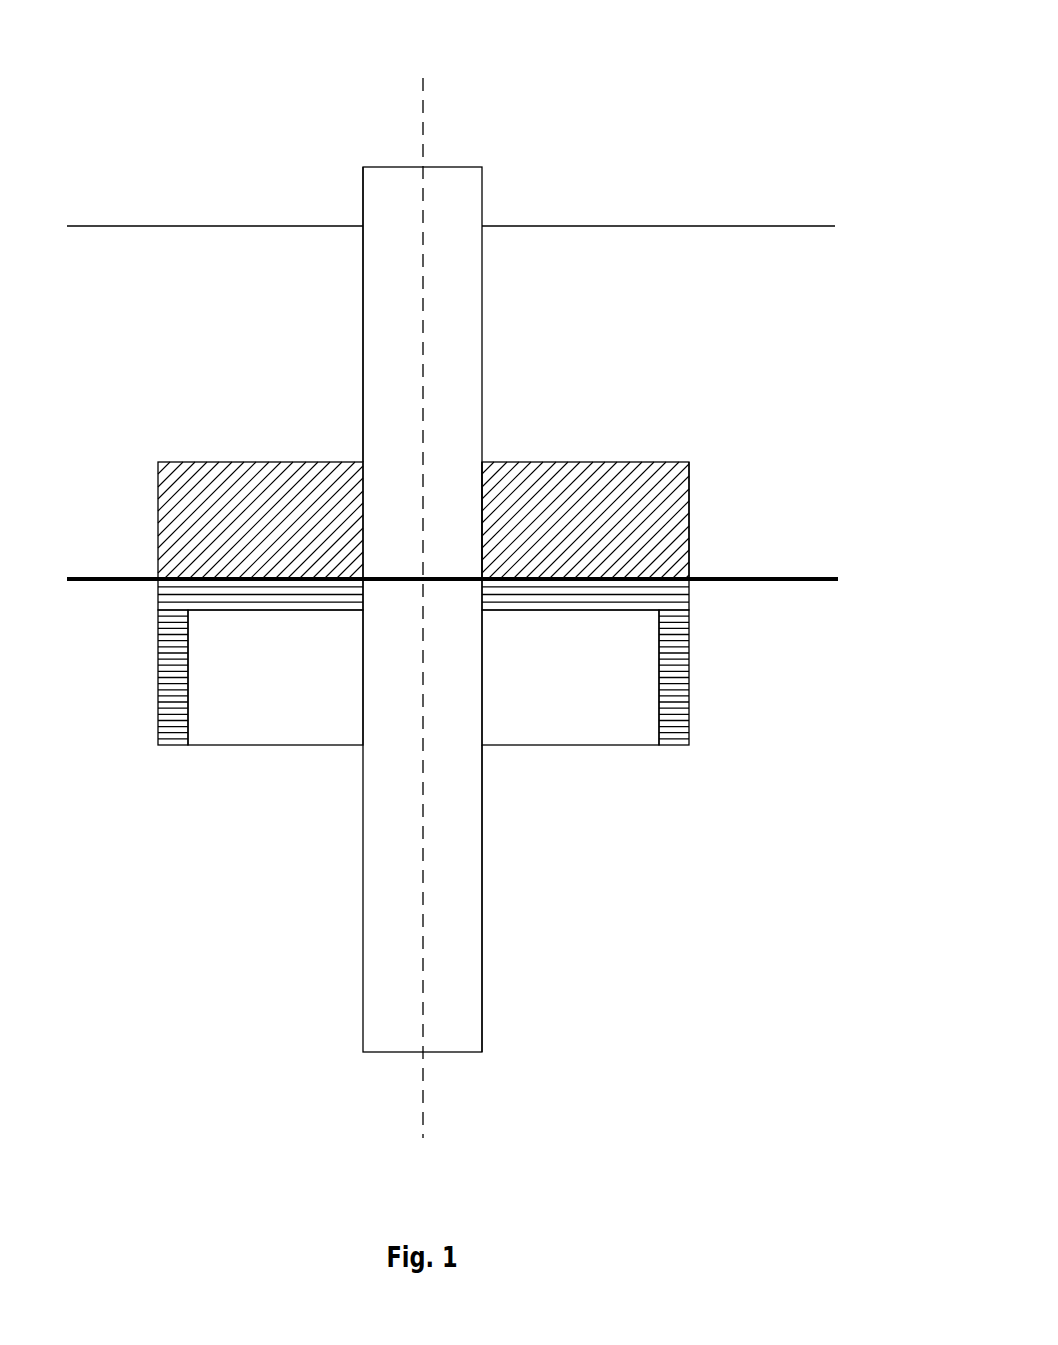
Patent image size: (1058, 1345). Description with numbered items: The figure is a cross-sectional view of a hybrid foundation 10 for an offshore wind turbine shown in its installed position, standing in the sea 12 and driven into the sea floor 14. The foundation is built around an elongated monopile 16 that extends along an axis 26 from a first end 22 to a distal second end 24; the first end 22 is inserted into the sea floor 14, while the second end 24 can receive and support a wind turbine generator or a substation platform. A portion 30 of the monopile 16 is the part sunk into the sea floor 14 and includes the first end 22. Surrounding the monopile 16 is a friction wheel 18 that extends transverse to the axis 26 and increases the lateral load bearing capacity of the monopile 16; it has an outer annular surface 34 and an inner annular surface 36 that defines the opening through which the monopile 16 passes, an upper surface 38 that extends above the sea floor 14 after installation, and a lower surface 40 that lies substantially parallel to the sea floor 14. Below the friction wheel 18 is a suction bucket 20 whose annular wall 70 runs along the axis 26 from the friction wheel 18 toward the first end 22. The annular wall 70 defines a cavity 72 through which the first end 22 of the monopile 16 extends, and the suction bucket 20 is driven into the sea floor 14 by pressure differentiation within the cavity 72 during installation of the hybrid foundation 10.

The hybrid foundation 10 is at (590, 56).
The sea 12 is at (639, 312).
The sea floor 14 is at (803, 556).
The monopile 16 is at (501, 289).
The friction wheel 18 is at (679, 438).
The suction bucket 20 is at (714, 680).
The first end 22 is at (504, 947).
The second end 24 is at (336, 293).
The axis 26 is at (427, 104).
The portion 30 is at (540, 823).
The outer annular surface 34 is at (689, 520).
The inner annular surface 36 is at (482, 518).
The upper surface 38 is at (247, 462).
The lower surface 40 is at (175, 578).
The annular wall 70 is at (158, 745).
The cavity 72 is at (304, 726).